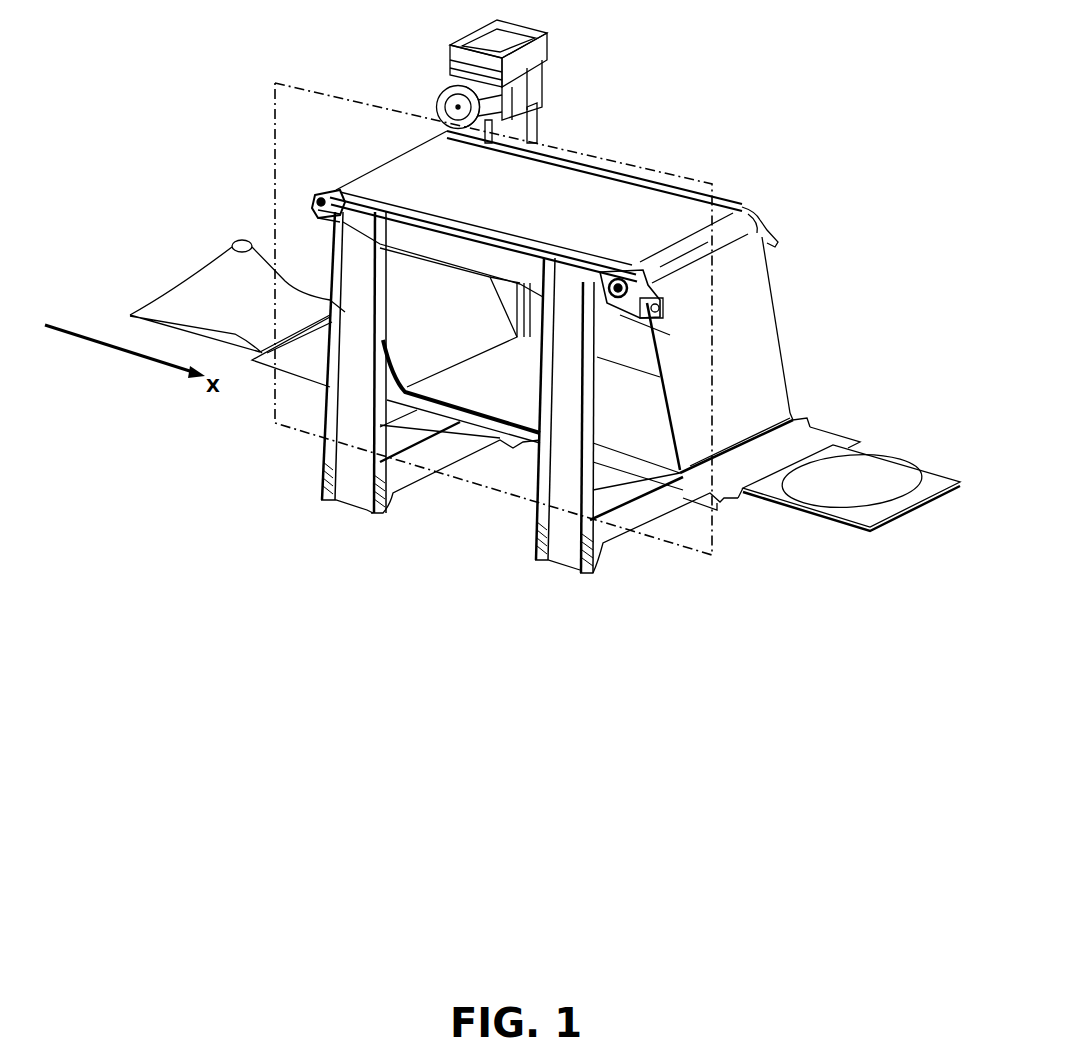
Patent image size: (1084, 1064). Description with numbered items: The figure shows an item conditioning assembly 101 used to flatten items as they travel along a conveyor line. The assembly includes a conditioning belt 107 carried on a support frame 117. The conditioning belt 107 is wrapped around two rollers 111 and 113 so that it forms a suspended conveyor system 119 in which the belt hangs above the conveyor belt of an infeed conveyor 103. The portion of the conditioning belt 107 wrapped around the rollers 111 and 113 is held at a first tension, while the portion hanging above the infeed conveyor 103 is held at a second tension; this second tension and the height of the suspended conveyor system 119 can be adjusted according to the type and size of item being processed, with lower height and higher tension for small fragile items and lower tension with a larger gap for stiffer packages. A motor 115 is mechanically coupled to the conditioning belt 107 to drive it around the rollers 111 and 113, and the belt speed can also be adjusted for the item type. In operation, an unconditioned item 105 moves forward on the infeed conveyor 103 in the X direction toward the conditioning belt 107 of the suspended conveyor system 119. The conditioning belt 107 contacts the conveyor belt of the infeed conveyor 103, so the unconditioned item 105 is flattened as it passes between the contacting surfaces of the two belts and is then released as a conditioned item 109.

The item conditioning assembly 101 is at (716, 122).
The infeed conveyor 103 is at (296, 360).
The unconditioned item 105 is at (200, 280).
The conditioning belt 107 is at (750, 365).
The conditioned item 109 is at (893, 482).
The roller 111 is at (636, 291).
The roller 113 is at (318, 202).
The motor 115 is at (462, 104).
The support frame 117 is at (567, 523).
The suspended conveyor system 119 is at (727, 533).